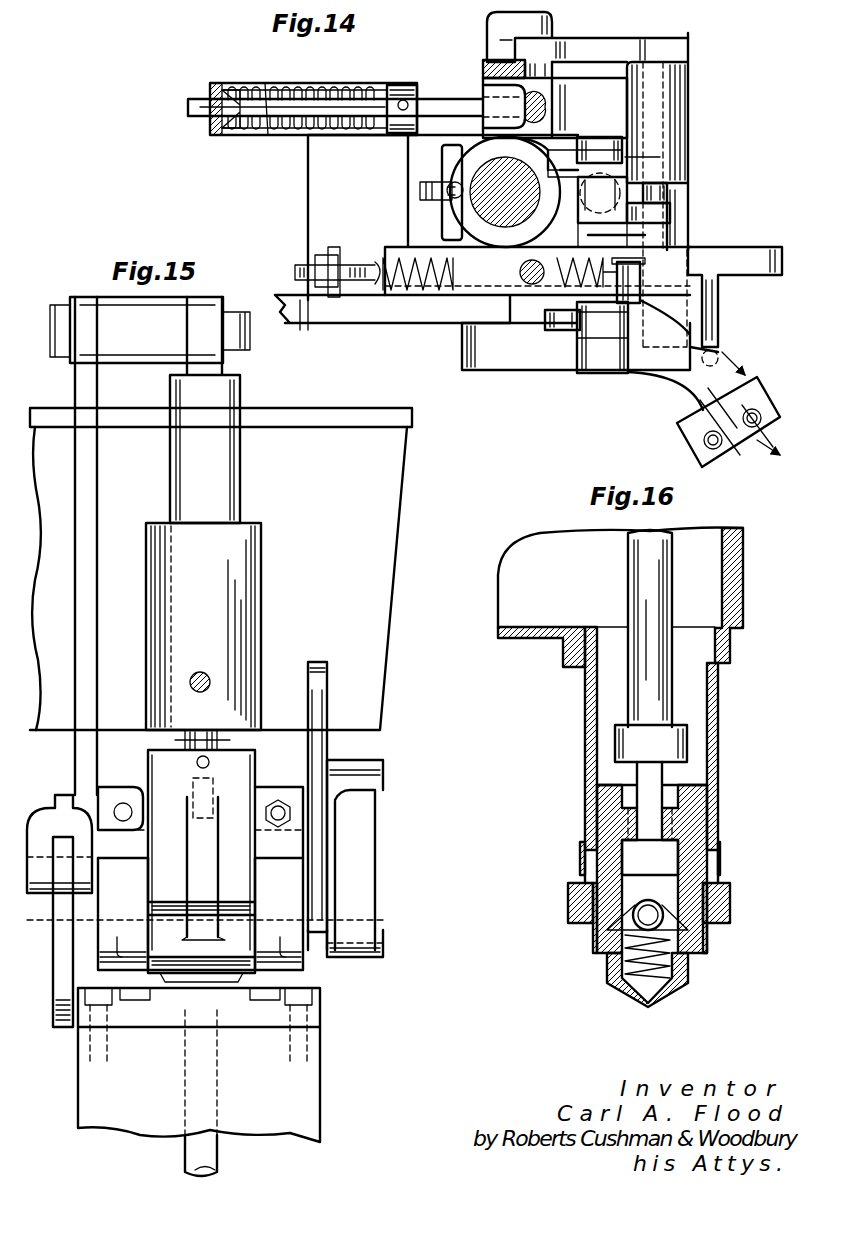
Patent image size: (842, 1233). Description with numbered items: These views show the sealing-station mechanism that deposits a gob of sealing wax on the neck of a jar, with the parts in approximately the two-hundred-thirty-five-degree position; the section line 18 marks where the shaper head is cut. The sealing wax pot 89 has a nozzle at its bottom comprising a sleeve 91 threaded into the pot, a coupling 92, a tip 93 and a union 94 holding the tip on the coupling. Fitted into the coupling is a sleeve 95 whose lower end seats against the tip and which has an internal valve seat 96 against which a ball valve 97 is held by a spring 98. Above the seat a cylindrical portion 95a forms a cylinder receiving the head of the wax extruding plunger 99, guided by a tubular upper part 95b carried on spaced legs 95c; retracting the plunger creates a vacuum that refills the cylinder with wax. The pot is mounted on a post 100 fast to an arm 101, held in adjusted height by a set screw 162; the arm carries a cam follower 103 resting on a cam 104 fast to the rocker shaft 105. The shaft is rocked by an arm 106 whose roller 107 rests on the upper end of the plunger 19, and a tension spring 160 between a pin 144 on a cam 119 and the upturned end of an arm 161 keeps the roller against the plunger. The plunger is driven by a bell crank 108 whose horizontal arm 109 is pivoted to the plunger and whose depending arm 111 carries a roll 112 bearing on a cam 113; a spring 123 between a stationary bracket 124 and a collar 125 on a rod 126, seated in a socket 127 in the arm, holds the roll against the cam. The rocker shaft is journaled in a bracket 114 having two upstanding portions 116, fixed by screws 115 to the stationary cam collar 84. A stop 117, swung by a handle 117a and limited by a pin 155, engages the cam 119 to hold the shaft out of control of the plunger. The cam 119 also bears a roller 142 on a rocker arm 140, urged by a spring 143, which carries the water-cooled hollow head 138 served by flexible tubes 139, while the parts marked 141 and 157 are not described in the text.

In FIG. 14, the section line 18- 18 is at (749, 411).
In FIG. 14, the plunger 19 is at (628, 172).
In FIG. 15, the plunger 19 is at (198, 1150).
In FIG. 15, the stationary cam collar 84 is at (321, 1076).
In FIG. 16, the sealing wax pot 89 is at (744, 580).
In FIG. 16, the sleeve 91 is at (718, 728).
In FIG. 16, the coupling 92 is at (722, 863).
In FIG. 16, the tip 93 is at (695, 990).
In FIG. 16, the union 94 is at (732, 910).
In FIG. 16, the sleeve 95 is at (612, 898).
In FIG. 16, the cylindrical portion 95a is at (582, 858).
In FIG. 16, the tubular upper part 95b is at (690, 744).
In FIG. 16, the legs 95c is at (660, 776).
In FIG. 16, the internal valve seat 96 is at (620, 928).
In FIG. 16, the ball valve 97 is at (650, 898).
In FIG. 16, the spring 98 is at (625, 950).
In FIG. 16, the wax extruding plunger 99 is at (674, 566).
In FIG. 14, the post 100 is at (500, 215).
In FIG. 15, the post 100 is at (203, 513).
In FIG. 14, the arm 101 is at (470, 206).
In FIG. 15, the arm 101 is at (233, 795).
In FIG. 14, the cam follower 103 is at (600, 140).
In FIG. 14, the cam 104 is at (555, 145).
In FIG. 14, the rocker shaft 105 is at (670, 192).
In FIG. 14, the arm 106 is at (665, 226).
In FIG. 14, the roller 107 is at (585, 230).
In FIG. 15, the roller 107 is at (122, 790).
In FIG. 15, the bell crank 108 is at (100, 316).
In FIG. 14, the horizontal arm 109 is at (596, 48).
In FIG. 14, the depending arm 111 is at (482, 68).
In FIG. 15, the depending arm 111 is at (90, 480).
In FIG. 15, the roll 112 is at (50, 893).
In FIG. 15, the cam 113 is at (58, 960).
In FIG. 15, the bracket 114 is at (322, 1005).
In FIG. 15, the screws 115 is at (312, 1040).
In FIG. 14, the upstanding portions 116 is at (692, 100).
In FIG. 15, the upstanding portions 116 is at (205, 914).
In FIG. 14, the stop 117 is at (414, 287).
In FIG. 15, the stop 117 is at (318, 855).
In FIG. 15, the handle 117a is at (327, 688).
In FIG. 14, the cam 119 is at (560, 322).
In FIG. 14, the spring 123 is at (318, 85).
In FIG. 14, the stationary bracket 124 is at (222, 88).
In FIG. 14, the collar 125 is at (403, 99).
In FIG. 14, the rod 126 is at (186, 105).
In FIG. 14, the socket 127 is at (545, 112).
In FIG. 14, the hollow head 138 is at (783, 406).
In FIG. 14, the flexible tubes 139 is at (748, 432).
In FIG. 14, the rocker arm 140 is at (550, 366).
In FIG. 15, the rocker arm 140 is at (360, 872).
In FIG. 15, the block 141 is at (375, 925).
In FIG. 14, the roller 142 is at (600, 318).
In FIG. 15, the roller 142 is at (335, 756).
In FIG. 14, the spring 143 is at (725, 350).
In FIG. 14, the pin 144 is at (620, 262).
In FIG. 14, the pin 155 is at (314, 327).
In FIG. 14, the bolt 157 is at (452, 183).
In FIG. 15, the bolt 157 is at (232, 742).
In FIG. 14, the tension spring 160 is at (440, 290).
In FIG. 14, the arm 161 is at (330, 250).
In FIG. 15, the set screw 162 is at (210, 680).